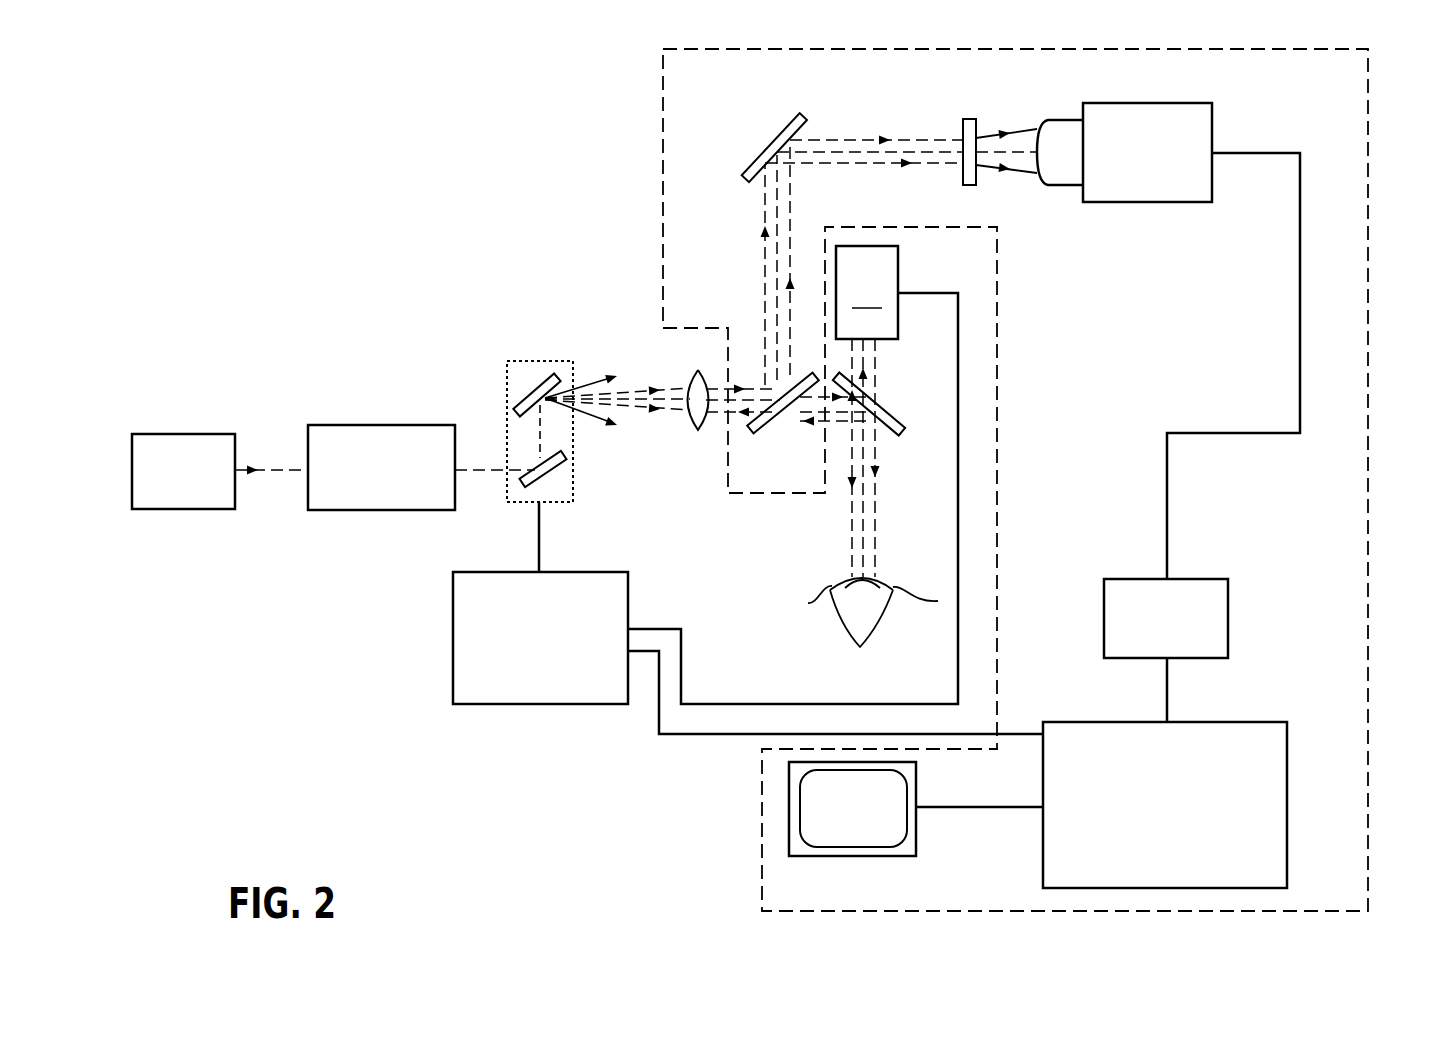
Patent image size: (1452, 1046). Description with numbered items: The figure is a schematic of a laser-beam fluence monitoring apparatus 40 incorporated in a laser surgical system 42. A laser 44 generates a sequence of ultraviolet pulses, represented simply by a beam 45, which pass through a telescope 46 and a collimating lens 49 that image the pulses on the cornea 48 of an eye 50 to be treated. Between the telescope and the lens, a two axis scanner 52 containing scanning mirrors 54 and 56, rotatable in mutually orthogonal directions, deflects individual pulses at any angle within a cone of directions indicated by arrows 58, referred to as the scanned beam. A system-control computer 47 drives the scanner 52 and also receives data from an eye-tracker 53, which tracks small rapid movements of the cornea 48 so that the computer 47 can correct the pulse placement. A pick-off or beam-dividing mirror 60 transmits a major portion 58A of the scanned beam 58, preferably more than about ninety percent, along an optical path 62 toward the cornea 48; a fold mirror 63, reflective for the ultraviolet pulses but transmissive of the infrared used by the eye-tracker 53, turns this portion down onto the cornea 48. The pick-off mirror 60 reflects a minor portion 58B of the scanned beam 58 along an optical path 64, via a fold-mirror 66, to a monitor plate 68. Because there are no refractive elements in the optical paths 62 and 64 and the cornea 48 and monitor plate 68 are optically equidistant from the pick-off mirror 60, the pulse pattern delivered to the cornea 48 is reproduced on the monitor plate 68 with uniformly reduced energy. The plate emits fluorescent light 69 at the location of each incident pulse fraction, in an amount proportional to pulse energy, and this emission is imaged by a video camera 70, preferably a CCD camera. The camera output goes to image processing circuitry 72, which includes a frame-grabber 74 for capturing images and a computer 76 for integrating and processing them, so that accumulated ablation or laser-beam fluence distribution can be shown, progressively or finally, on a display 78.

The laser-beam fluence monitoring apparatus 40 is at (663, 117).
The laser surgical system 42 is at (596, 830).
The laser 44 is at (200, 510).
The beam 45 is at (292, 475).
The telescope 46 is at (342, 510).
The system-control computer 47 is at (557, 707).
The cornea 48 is at (864, 580).
The collimating lens 49 is at (693, 425).
The eye 50 is at (816, 642).
The two axis (XY) scanner 52 is at (498, 388).
The eye tracking device (eye-tracker) 53 is at (867, 292).
The scanning mirror 54 is at (550, 482).
The scanning mirror 56 is at (538, 380).
The scanned beam 58 is at (588, 383).
The major portion of scanned beam 58A is at (852, 541).
The minor portion of scanned beam 58B is at (790, 243).
The pick-off or beam-dividing mirror 60 is at (770, 433).
The optical path 62 is at (800, 412).
The fold mirror 63 is at (873, 398).
The optical path 64 is at (777, 205).
The fold-mirror 66 is at (787, 130).
The monitor plate 68 is at (967, 118).
The fluorescent light 69 is at (1025, 135).
The video camera 70 is at (1158, 203).
The image processing circuitry 72 is at (1278, 688).
The frame-grabber 74 is at (1185, 578).
The computer 76 is at (1288, 782).
The display 78 is at (835, 857).